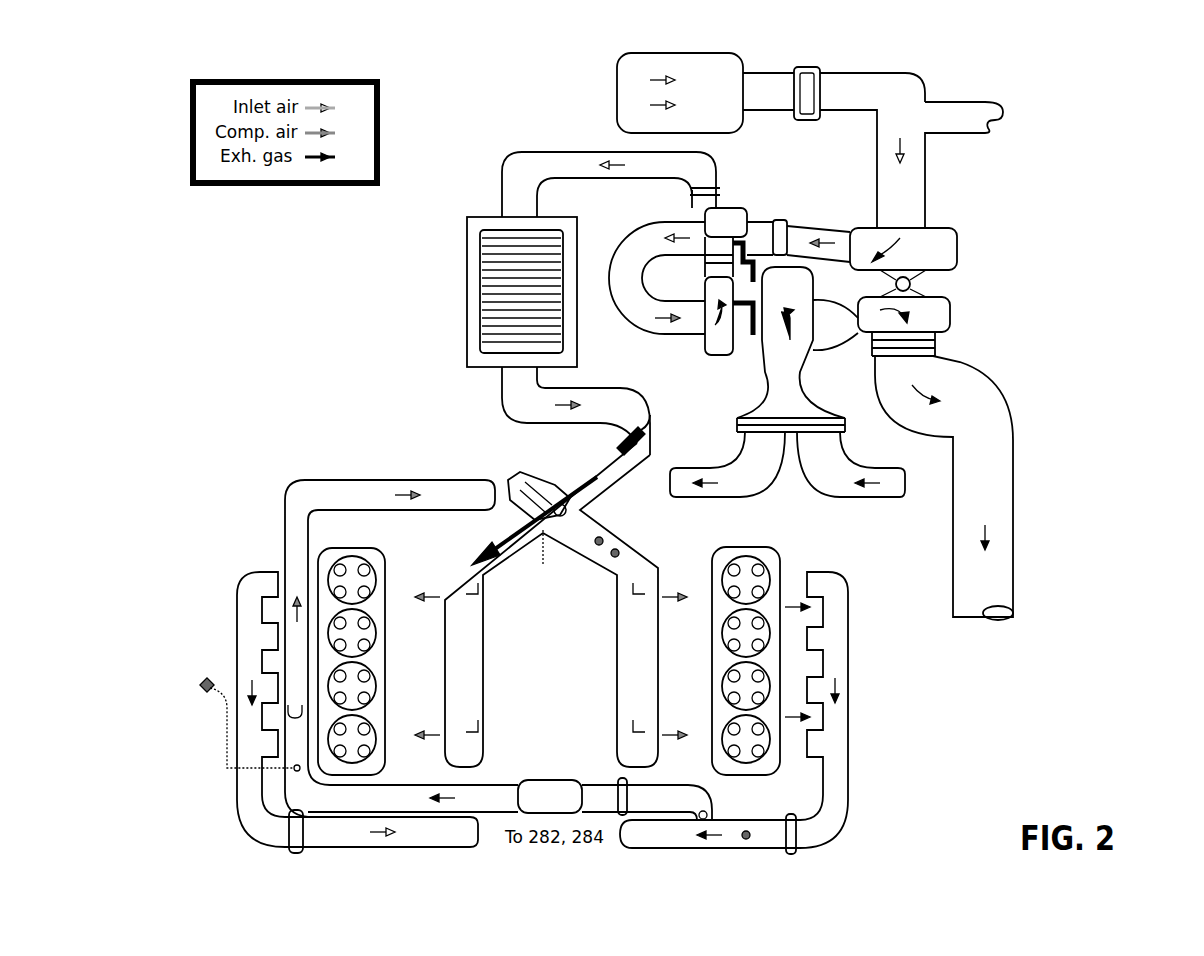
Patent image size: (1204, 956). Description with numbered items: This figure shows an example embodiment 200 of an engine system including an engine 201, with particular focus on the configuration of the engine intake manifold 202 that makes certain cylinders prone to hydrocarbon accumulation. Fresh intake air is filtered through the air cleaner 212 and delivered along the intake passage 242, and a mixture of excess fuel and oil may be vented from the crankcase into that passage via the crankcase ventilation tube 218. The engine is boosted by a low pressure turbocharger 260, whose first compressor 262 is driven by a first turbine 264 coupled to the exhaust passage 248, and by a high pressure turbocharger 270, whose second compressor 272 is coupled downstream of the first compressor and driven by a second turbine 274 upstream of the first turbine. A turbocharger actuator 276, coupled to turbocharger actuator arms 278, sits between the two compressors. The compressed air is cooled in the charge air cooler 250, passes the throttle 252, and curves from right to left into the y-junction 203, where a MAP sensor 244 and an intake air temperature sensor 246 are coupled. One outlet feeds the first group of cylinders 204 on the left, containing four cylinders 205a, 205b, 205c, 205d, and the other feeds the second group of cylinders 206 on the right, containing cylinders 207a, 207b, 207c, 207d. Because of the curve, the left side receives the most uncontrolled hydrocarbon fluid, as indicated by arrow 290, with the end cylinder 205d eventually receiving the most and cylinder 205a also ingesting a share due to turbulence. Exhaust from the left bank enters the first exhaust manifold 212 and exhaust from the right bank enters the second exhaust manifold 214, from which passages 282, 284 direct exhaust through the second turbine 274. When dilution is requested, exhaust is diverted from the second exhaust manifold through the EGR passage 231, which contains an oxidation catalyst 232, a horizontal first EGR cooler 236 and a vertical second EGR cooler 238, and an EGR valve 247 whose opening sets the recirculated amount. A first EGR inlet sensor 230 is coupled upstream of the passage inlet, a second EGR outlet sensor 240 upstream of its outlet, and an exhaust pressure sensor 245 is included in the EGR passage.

The engine system embodiment 200 is at (1122, 67).
The engine 201 is at (903, 700).
The engine intake manifold 202 is at (611, 654).
The y-junction 203 is at (560, 538).
The first group of cylinders 204 is at (376, 549).
The cylinder 205a is at (378, 578).
The cylinder 205b is at (378, 631).
The cylinder 205c is at (378, 684).
The cylinder 205d is at (378, 732).
The second group of cylinders 206 is at (780, 562).
The cylinder 207a is at (724, 578).
The cylinder 207b is at (724, 631).
The cylinder 207c is at (724, 682).
The cylinder 207d is at (724, 732).
The air cleaner 212 is at (688, 53).
The second exhaust manifold 214 is at (810, 108).
The crankcase ventilation tube 218 is at (968, 103).
The first EGR inlet sensor 230 is at (750, 831).
The EGR passage 231 is at (655, 786).
The oxidation catalyst 232 is at (553, 795).
The first EGR cooler 236 is at (296, 552).
The second EGR cooler 238 is at (364, 490).
The second EGR outlet sensor 240 is at (506, 497).
The intake passage 242 is at (913, 80).
The MAP sensor 244 is at (603, 538).
The exhaust pressure sensor 245 is at (205, 678).
The intake air temperature sensor 246 is at (621, 553).
The EGR valve 247 is at (538, 556).
The exhaust passage 248 is at (1013, 527).
The charge air cooler 250 is at (467, 287).
The throttle 252 is at (640, 428).
The low pressure turbocharger 260 is at (942, 310).
The first compressor 262 is at (950, 232).
The first turbine 264 is at (948, 330).
The high pressure turbocharger 270 is at (753, 362).
The second compressor 272 is at (710, 355).
The second turbine 274 is at (795, 378).
The turbocharger actuator 276 is at (733, 215).
The turbocharger actuator arms 278 is at (762, 262).
The passage 282 is at (748, 488).
The passage 284 is at (836, 488).
The arrow 290 is at (495, 556).